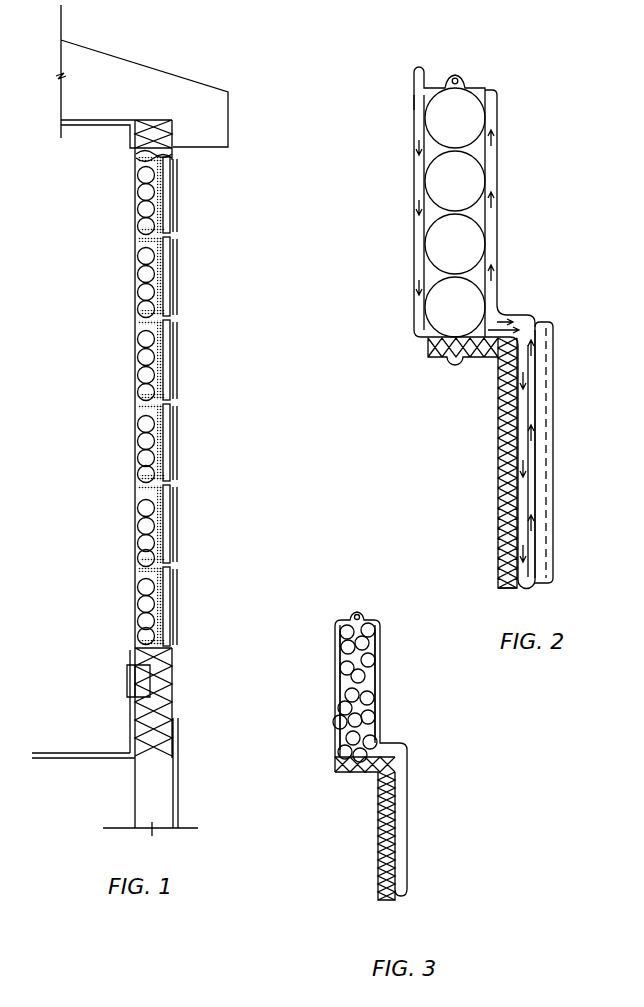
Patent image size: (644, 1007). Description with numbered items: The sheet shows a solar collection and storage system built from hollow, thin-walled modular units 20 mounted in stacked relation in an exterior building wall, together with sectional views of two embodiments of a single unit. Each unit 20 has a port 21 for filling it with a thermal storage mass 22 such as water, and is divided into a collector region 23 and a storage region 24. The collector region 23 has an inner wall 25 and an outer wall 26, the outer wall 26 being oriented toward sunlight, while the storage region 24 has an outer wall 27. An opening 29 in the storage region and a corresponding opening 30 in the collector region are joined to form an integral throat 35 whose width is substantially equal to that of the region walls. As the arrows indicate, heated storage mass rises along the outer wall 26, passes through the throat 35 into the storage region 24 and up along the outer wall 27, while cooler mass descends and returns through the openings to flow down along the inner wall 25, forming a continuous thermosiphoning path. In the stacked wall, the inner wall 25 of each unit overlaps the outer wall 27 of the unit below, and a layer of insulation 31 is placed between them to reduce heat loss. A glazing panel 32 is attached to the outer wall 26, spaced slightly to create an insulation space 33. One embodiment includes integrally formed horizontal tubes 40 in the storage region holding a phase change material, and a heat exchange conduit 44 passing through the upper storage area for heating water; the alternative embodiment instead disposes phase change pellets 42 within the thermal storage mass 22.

In FIG. 1, the modular unit 20 is at (137, 205).
In FIG. 2, the modular unit 20 is at (481, 326).
In FIG. 3, the modular unit 20 is at (347, 756).
In FIG. 2, the port 21 is at (414, 104).
In FIG. 2, the thermal storage mass 22 is at (433, 212).
In FIG. 3, the thermal storage mass 22 is at (368, 674).
In FIG. 2, the collector region 23 is at (522, 473).
In FIG. 2, the storage region 24 is at (498, 193).
In FIG. 2, the inner wall of collector region 25 is at (500, 522).
In FIG. 2, the outer wall of collector region 26 is at (537, 518).
In FIG. 2, the outer wall of storage region 27 is at (497, 236).
In FIG. 2, the opening of storage region 29 is at (525, 325).
In FIG. 2, the opening of collector region 30 is at (492, 364).
In FIG. 1, the layer of insulation 31 is at (168, 200).
In FIG. 2, the layer of insulation 31 is at (503, 460).
In FIG. 2, the glazing panel 32 is at (550, 427).
In FIG. 2, the insulation space 33 is at (540, 377).
In FIG. 2, the integral throat 35 is at (512, 318).
In FIG. 2, the fluid tight chamber / horizontal tubes 40 is at (432, 168).
In FIG. 3, the pellets 42 is at (343, 648).
In FIG. 2, the heat exchange conduit 44 is at (468, 83).